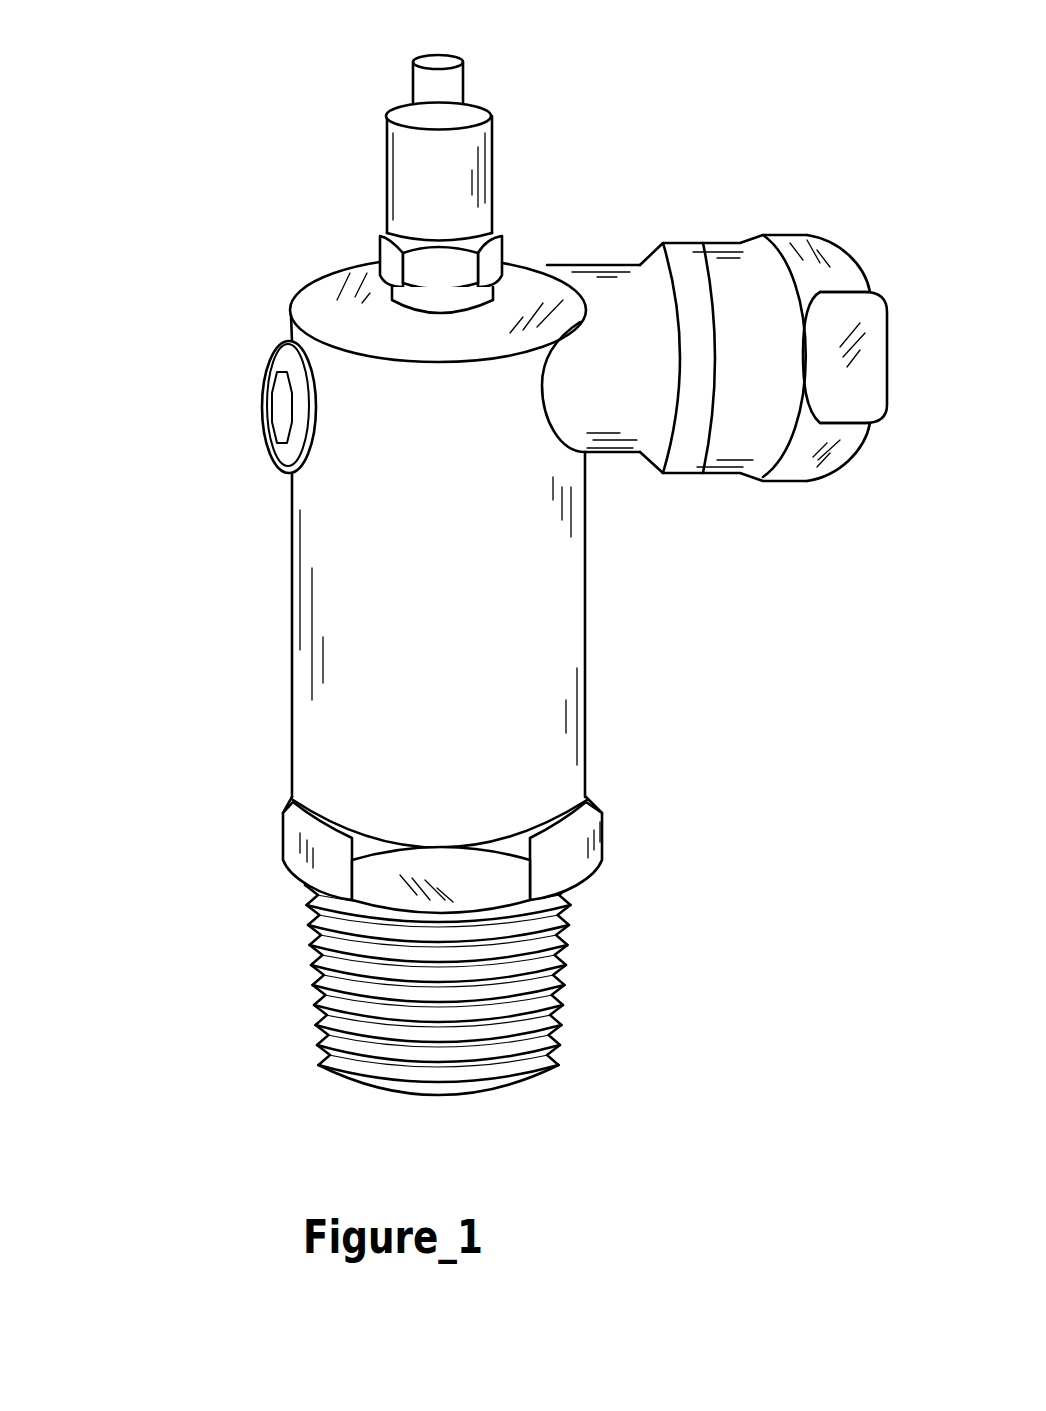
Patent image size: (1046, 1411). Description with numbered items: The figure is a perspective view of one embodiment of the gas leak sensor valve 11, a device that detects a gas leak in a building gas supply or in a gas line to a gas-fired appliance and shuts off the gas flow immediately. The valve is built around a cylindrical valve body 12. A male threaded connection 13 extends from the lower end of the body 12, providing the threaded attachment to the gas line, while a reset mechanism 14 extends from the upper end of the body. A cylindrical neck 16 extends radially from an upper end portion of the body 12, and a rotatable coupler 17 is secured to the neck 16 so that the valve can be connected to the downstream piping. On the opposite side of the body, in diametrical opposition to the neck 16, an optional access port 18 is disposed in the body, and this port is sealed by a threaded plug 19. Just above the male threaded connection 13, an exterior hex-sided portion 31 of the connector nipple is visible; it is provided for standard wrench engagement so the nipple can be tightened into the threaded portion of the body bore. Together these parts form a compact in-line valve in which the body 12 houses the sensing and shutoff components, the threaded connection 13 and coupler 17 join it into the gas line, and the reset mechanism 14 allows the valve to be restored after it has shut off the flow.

The gas leak sensor valve 11 is at (467, 554).
The valve body 12 is at (395, 542).
The male threaded connection 13 is at (290, 963).
The reset mechanism 14 is at (347, 160).
The cylindrical neck 16 is at (600, 237).
The rotatable coupler 17 is at (812, 207).
The access port 18 is at (182, 361).
The threaded plug 19 is at (280, 383).
The exterior hex-sided portion 31 is at (298, 838).